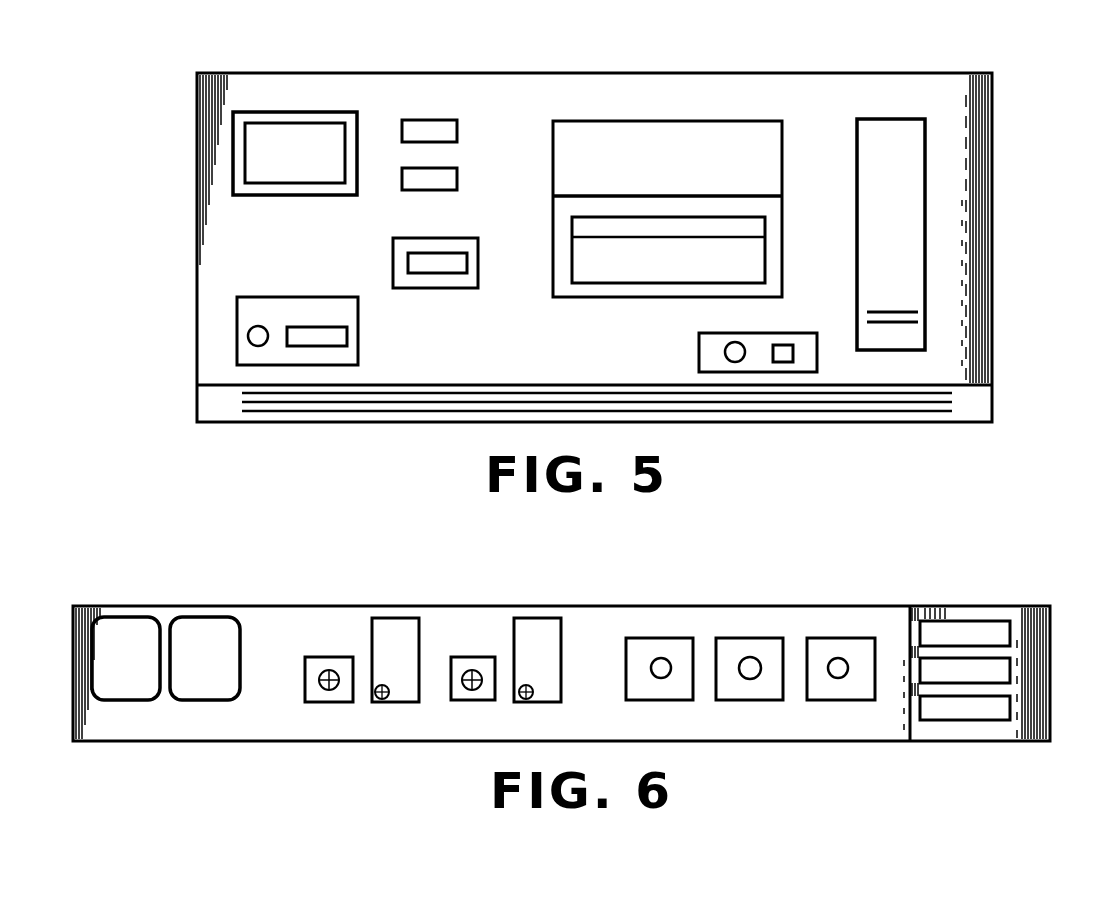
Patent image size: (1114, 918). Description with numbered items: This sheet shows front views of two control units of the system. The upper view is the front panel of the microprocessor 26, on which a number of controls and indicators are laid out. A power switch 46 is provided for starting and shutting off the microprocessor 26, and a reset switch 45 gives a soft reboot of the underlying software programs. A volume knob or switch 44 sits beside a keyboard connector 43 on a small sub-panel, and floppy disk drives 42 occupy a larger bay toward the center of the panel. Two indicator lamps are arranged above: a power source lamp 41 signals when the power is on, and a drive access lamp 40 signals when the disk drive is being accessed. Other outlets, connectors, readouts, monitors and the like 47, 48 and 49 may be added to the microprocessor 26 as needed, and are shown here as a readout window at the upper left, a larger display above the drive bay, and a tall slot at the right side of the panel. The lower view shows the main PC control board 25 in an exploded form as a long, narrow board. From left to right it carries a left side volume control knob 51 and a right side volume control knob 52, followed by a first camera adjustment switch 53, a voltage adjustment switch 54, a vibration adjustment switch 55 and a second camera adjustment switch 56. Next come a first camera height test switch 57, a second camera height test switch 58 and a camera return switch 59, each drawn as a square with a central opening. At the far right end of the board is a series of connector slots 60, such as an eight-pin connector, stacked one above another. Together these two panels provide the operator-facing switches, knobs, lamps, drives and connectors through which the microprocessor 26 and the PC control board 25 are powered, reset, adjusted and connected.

In FIG. 6, the main PC control board 25 is at (466, 600).
In FIG. 5, the microprocessor 26 is at (672, 66).
In FIG. 5, the drive access lamp 40 is at (455, 180).
In FIG. 5, the power source lamp 41 is at (445, 126).
In FIG. 5, the floppy disk drives 42 is at (655, 260).
In FIG. 5, the keyboard connector 43 is at (258, 332).
In FIG. 5, the volume knob or switch 44 is at (321, 332).
In FIG. 5, the reset switch 45 is at (439, 265).
In FIG. 5, the power switch 46 is at (755, 346).
In FIG. 5, the other outlets, connectors, readouts, monitors and the like 47 is at (303, 140).
In FIG. 5, the other outlets, connectors, readouts, monitors and the like 48 is at (760, 134).
In FIG. 5, the other outlets, connectors, readouts, monitors and the like 49 is at (905, 156).
In FIG. 6, the left side volume control knob 51 is at (129, 635).
In FIG. 6, the right side volume control knob 52 is at (205, 635).
In FIG. 6, the first camera adjustment switch 53 is at (322, 660).
In FIG. 6, the voltage adjustment switch 54 is at (400, 657).
In FIG. 6, the vibration adjustment switch 55 is at (484, 660).
In FIG. 6, the second camera adjustment switch 56 is at (532, 630).
In FIG. 6, the first camera height test switch 57 is at (645, 647).
In FIG. 6, the second camera height test switch 58 is at (725, 647).
In FIG. 6, the camera return switch 59 is at (820, 645).
In FIG. 6, the connector slots 60 is at (953, 630).